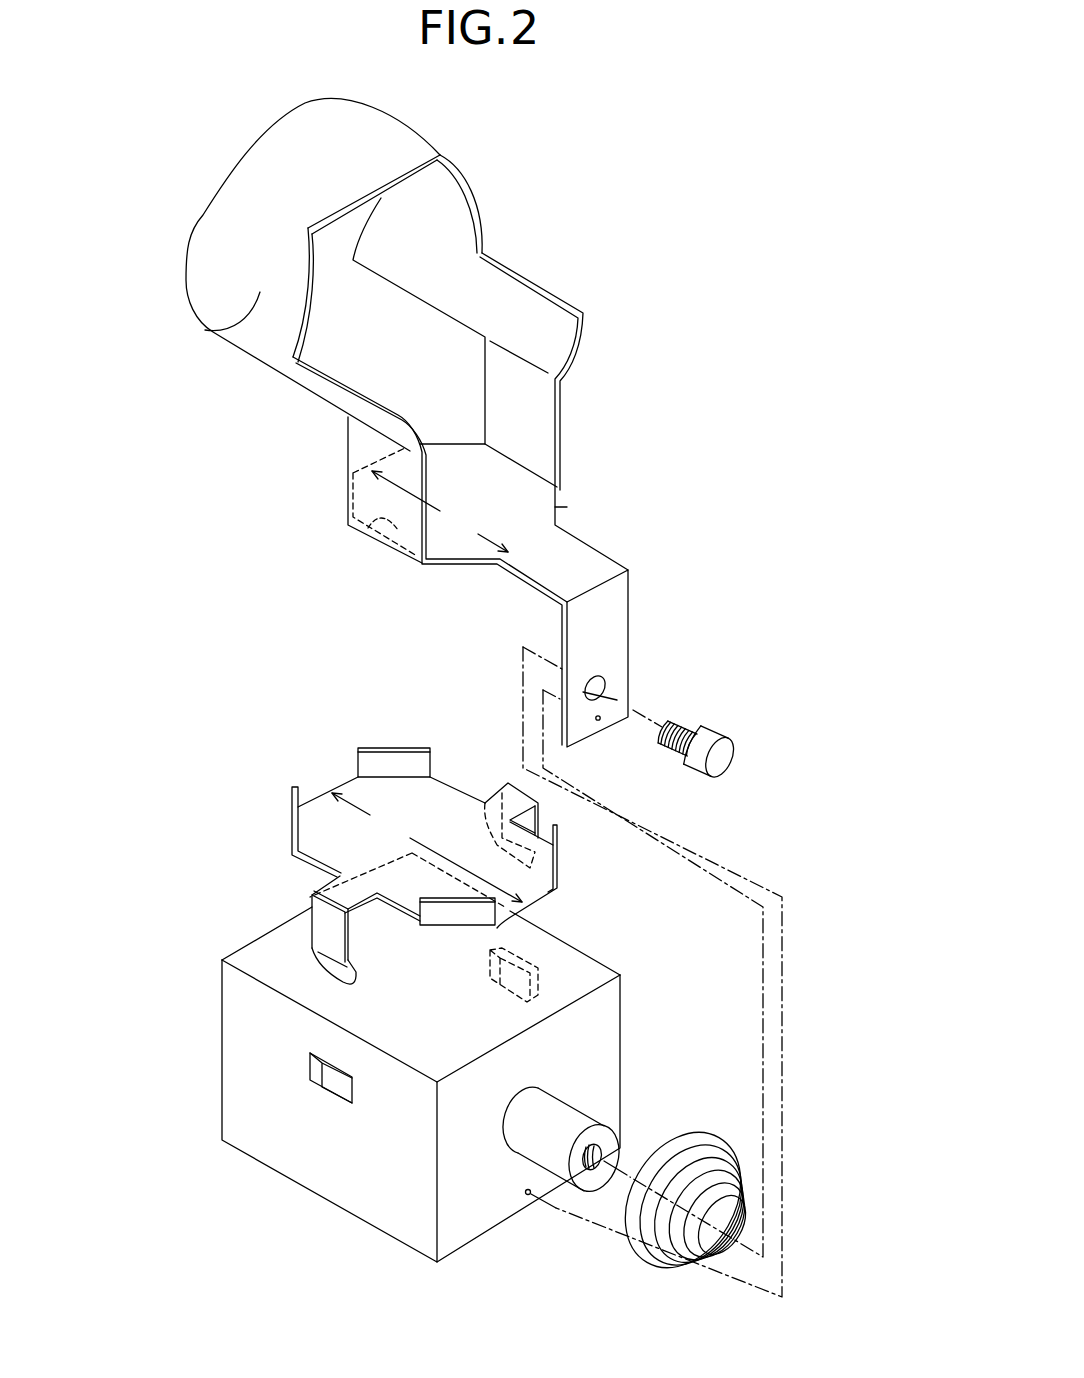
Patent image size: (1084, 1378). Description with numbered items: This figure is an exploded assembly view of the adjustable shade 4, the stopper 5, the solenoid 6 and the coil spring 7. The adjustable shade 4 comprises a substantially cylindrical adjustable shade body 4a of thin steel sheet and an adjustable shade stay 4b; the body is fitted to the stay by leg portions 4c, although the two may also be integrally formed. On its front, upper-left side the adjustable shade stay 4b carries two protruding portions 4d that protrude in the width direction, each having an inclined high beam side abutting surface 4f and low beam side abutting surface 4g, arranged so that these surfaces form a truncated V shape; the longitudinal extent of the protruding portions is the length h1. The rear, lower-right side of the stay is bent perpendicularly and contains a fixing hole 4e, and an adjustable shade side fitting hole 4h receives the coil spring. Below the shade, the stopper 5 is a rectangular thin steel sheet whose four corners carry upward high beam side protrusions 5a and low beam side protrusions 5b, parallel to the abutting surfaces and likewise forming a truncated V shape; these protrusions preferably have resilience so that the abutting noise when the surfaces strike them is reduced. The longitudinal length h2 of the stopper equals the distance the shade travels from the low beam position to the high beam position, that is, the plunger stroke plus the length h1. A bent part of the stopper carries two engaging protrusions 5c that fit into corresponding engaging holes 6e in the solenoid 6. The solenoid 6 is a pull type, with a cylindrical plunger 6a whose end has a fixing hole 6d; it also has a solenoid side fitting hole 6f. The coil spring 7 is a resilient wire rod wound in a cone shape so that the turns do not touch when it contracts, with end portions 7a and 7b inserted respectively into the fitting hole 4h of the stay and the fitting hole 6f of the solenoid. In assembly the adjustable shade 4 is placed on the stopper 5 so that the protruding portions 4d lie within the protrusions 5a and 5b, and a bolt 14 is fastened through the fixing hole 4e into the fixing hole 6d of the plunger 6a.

The adjustable shade 4 is at (502, 226).
The adjustable shade body 4a is at (204, 326).
The adjustable shade stay 4b is at (572, 553).
The leg portions 4c is at (358, 455).
The protruding portions 4d is at (372, 525).
The fixing hole 4e is at (598, 687).
The high beam side abutting surfaces 4f is at (443, 440).
The low beam side abutting surfaces 4g is at (567, 507).
The adjustable shade side fitting hole 4h is at (600, 720).
The bolt 14 is at (727, 754).
The stopper 5 is at (330, 780).
The high beam side protrusions 5a is at (397, 748).
The low beam side protrusions 5b is at (558, 845).
The engaging protrusions 5c is at (497, 838).
The length of the protruding portions h1 is at (440, 511).
The longitudinal length of the stopper h2 is at (427, 847).
The solenoid 6 is at (212, 1013).
The plunger 6a is at (558, 1122).
The fixing hole 6d is at (598, 1156).
The engaging holes 6e is at (322, 1068).
The solenoid side fitting hole 6f is at (527, 1196).
The coil spring 7 is at (712, 1122).
The end portion 7a is at (735, 1268).
The end portion 7b is at (636, 1258).